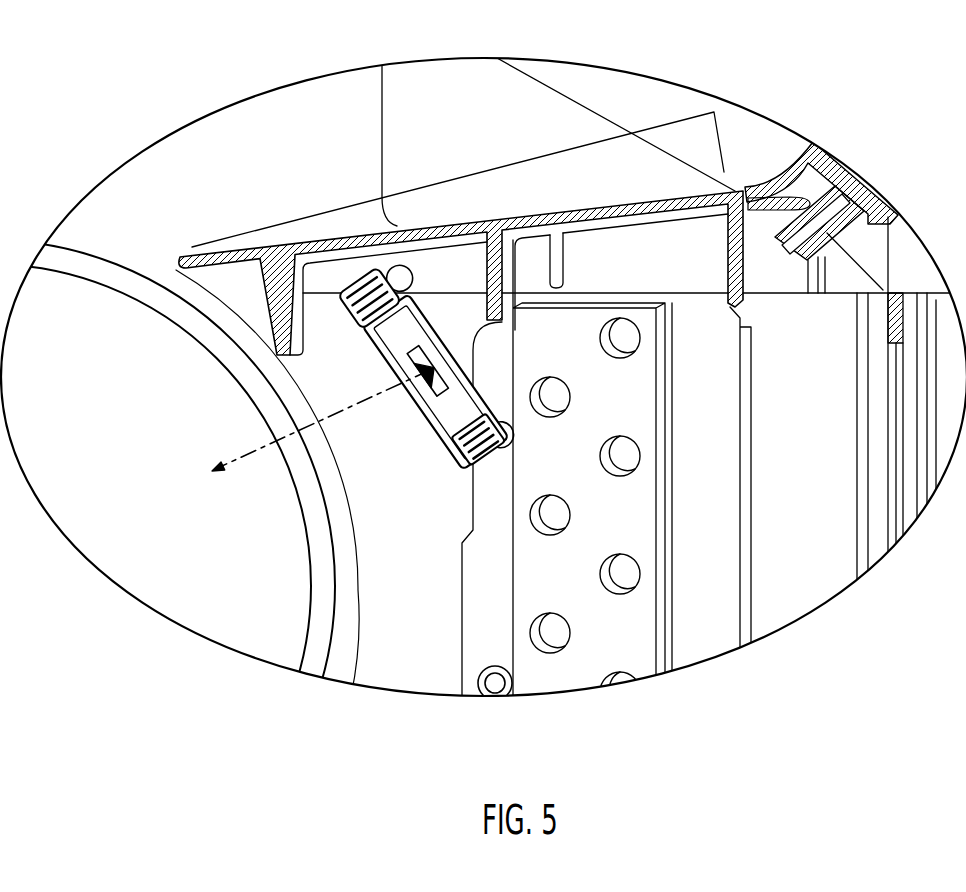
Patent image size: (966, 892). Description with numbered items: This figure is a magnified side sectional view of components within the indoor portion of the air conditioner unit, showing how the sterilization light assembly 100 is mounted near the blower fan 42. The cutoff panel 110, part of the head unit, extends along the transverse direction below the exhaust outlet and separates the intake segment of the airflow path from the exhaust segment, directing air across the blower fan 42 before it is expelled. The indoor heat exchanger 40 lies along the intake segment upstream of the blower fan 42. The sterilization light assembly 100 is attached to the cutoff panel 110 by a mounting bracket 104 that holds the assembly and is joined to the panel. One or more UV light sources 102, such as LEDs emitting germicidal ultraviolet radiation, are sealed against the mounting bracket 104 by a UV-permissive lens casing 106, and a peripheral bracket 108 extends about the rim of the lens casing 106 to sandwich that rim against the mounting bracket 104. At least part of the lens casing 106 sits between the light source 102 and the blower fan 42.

The indoor heat exchanger 40 is at (663, 622).
The blower fan 42 is at (262, 632).
The sterilization light assembly 100 is at (431, 408).
The UV light source 102 is at (427, 371).
The mounting bracket 104 is at (369, 298).
The lens casing 106 is at (435, 381).
The peripheral bracket 108 is at (478, 439).
The cutoff panel 110 is at (460, 224).